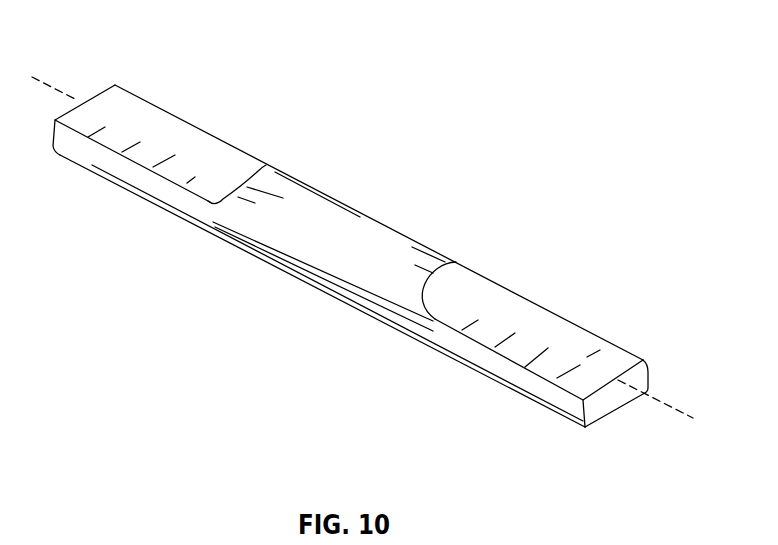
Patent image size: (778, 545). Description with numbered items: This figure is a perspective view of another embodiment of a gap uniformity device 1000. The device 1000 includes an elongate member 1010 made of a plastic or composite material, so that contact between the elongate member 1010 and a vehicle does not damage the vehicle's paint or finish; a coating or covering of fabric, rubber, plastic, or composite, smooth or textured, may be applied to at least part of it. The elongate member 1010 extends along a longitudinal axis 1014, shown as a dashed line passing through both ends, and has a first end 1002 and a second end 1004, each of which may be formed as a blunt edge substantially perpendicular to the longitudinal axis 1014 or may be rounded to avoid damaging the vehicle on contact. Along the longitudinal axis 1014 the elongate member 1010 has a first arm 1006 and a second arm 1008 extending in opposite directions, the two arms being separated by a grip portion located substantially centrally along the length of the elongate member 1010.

The device 1000 is at (623, 93).
The first end 1002 is at (115, 84).
The second end 1004 is at (613, 342).
The first arm 1006 is at (165, 122).
The second arm 1008 is at (538, 323).
The elongate member 1010 is at (392, 222).
The longitudinal axis 1014 is at (672, 410).